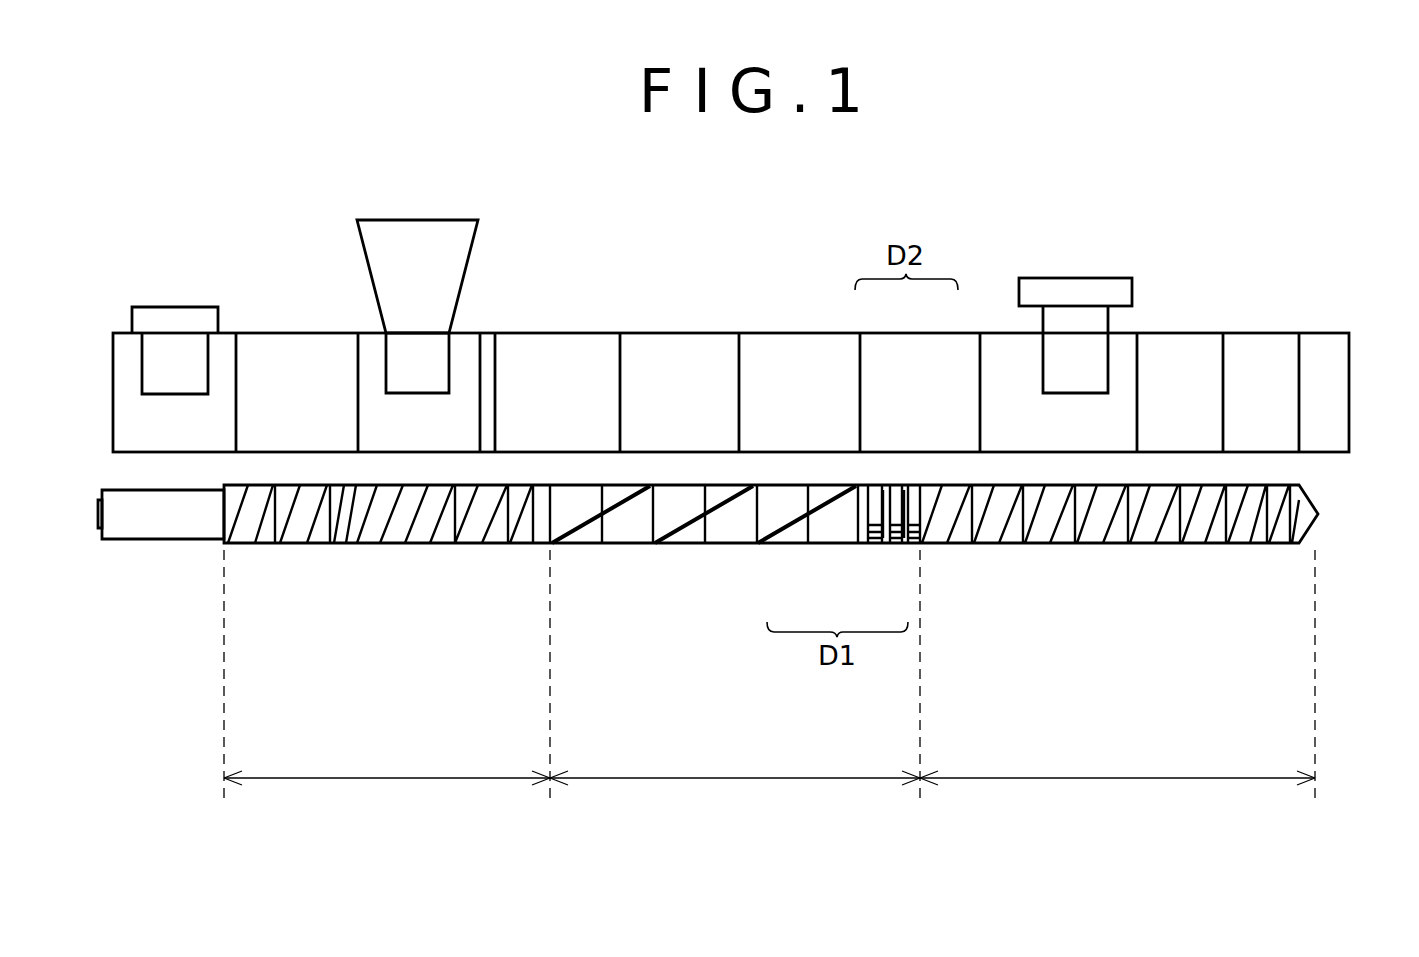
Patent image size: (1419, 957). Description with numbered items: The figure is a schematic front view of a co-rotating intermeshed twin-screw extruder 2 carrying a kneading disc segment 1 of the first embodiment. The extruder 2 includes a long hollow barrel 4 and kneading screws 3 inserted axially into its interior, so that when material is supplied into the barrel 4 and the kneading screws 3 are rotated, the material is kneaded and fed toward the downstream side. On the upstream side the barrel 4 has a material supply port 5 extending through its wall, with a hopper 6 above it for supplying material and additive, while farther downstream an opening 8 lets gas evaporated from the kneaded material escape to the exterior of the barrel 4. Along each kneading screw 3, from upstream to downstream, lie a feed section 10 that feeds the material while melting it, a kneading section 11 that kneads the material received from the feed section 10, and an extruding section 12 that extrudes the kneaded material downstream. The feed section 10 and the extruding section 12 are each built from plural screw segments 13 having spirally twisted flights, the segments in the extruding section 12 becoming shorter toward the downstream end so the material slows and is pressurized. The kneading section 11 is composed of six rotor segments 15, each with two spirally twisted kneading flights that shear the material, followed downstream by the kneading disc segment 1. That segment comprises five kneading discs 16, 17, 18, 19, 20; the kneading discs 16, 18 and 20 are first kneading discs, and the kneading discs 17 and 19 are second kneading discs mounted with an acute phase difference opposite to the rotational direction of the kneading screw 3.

The kneading disc segment 1 is at (928, 550).
The twin-screw extruder 2 is at (1243, 248).
The kneading screw 3 is at (1325, 506).
The barrel 4 is at (1335, 368).
The material supply port 5 is at (414, 333).
The hopper 6 is at (468, 262).
The opening 8 is at (1070, 293).
The feed section 10 is at (400, 782).
The kneading section 11 is at (737, 782).
The extruding section 12 is at (1125, 782).
The screw segment 13 is at (390, 548).
The rotor segment 15 is at (683, 545).
The kneading disc 16 is at (865, 545).
The kneading disc 17 is at (876, 490).
The kneading disc 18 is at (883, 545).
The kneading disc 19 is at (903, 490).
The kneading disc 20 is at (908, 545).